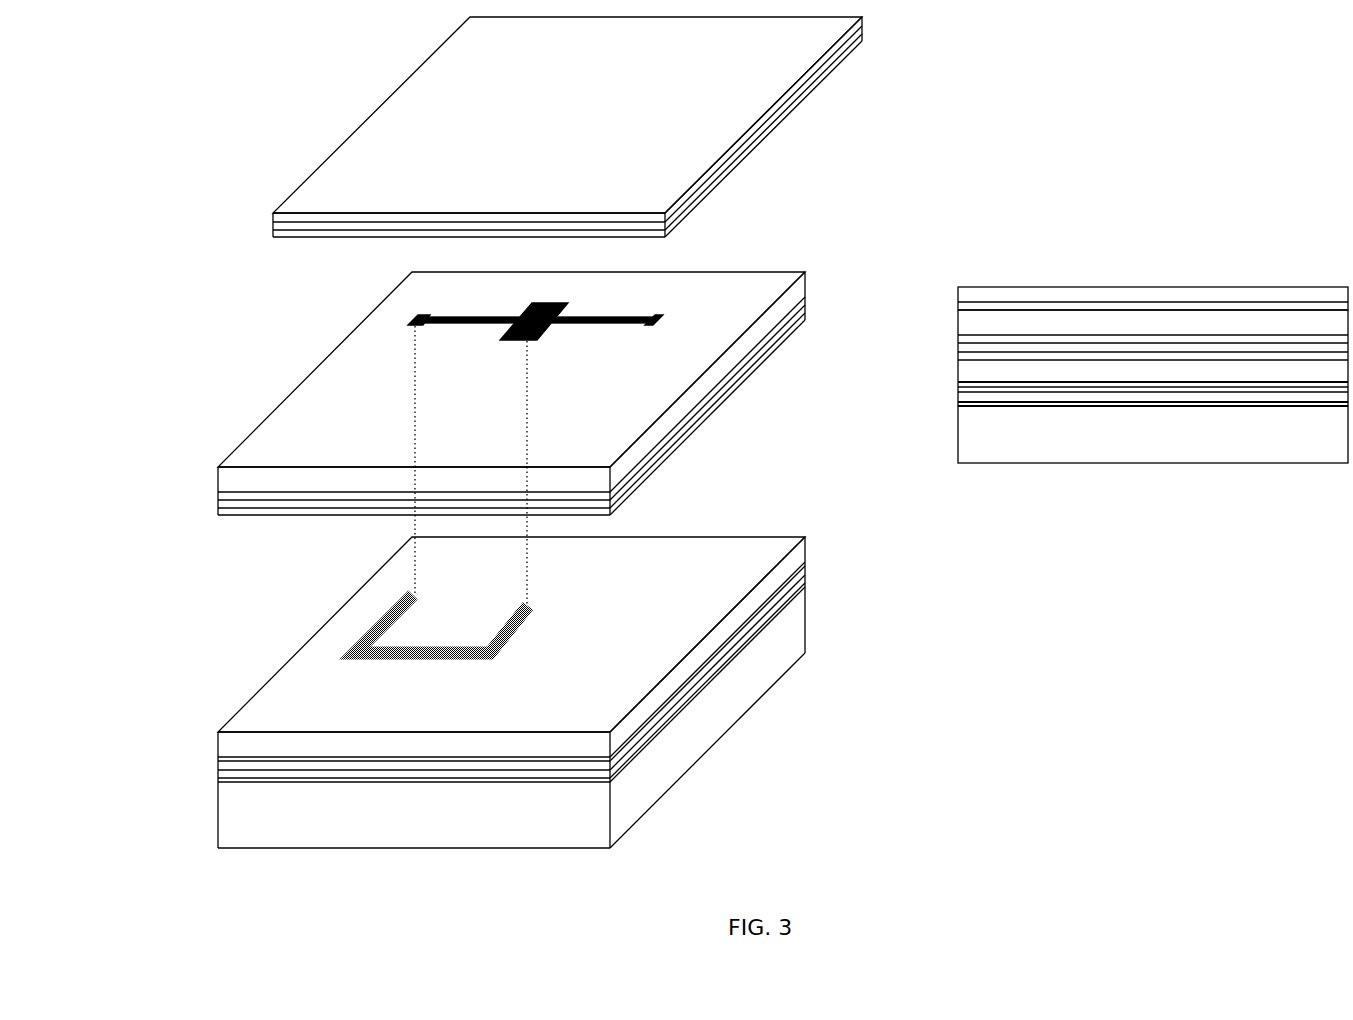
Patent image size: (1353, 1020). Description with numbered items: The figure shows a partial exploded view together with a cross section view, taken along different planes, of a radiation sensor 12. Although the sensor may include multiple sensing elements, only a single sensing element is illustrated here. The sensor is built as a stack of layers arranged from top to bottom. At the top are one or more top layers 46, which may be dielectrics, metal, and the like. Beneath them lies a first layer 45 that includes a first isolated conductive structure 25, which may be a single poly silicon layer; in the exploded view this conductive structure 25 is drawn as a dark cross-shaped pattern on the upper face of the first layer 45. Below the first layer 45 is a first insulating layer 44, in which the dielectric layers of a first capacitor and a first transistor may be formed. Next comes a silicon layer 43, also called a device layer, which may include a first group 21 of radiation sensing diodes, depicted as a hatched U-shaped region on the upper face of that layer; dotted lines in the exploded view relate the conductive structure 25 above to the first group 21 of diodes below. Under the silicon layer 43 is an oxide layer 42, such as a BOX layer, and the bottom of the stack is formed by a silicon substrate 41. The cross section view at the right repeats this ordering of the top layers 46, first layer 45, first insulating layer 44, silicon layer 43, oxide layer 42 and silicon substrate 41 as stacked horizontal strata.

The radiation sensor 12 is at (870, 836).
The first group of radiation sensing diodes 21 is at (507, 640).
The first isolated conductive structure 25 is at (587, 323).
The silicon substrate 41 is at (513, 826).
The oxide layer 42 is at (805, 582).
The silicon layer 43 is at (722, 591).
The first insulating layer 44 is at (958, 348).
The first layer 45 is at (720, 311).
The top layers 46 is at (627, 106).